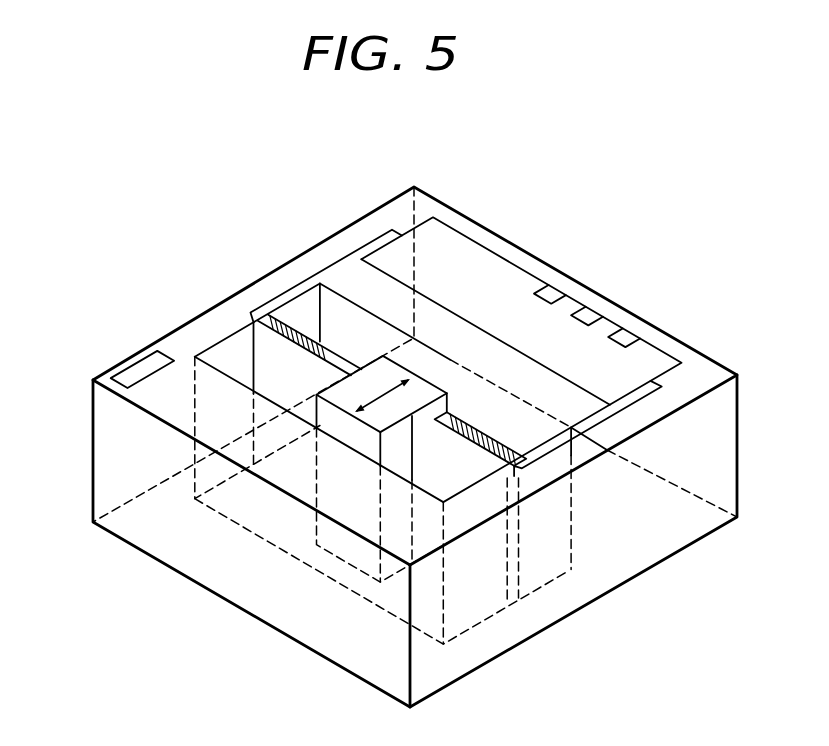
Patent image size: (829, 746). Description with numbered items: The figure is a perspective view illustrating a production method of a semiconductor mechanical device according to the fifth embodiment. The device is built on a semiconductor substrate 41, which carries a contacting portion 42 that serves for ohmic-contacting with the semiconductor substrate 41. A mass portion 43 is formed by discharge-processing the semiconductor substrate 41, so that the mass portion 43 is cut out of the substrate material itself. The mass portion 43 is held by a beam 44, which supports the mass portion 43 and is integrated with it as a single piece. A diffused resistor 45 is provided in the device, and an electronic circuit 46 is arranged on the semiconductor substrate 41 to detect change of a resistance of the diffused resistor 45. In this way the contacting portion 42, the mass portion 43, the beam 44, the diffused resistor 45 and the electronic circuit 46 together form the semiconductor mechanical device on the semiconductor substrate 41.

The semiconductor substrate 41 is at (637, 546).
The contacting portion 42 is at (128, 364).
The mass portion 43 is at (424, 404).
The beam 44 is at (330, 355).
The diffused resistor 45 is at (497, 440).
The electronic circuit 46 is at (612, 330).